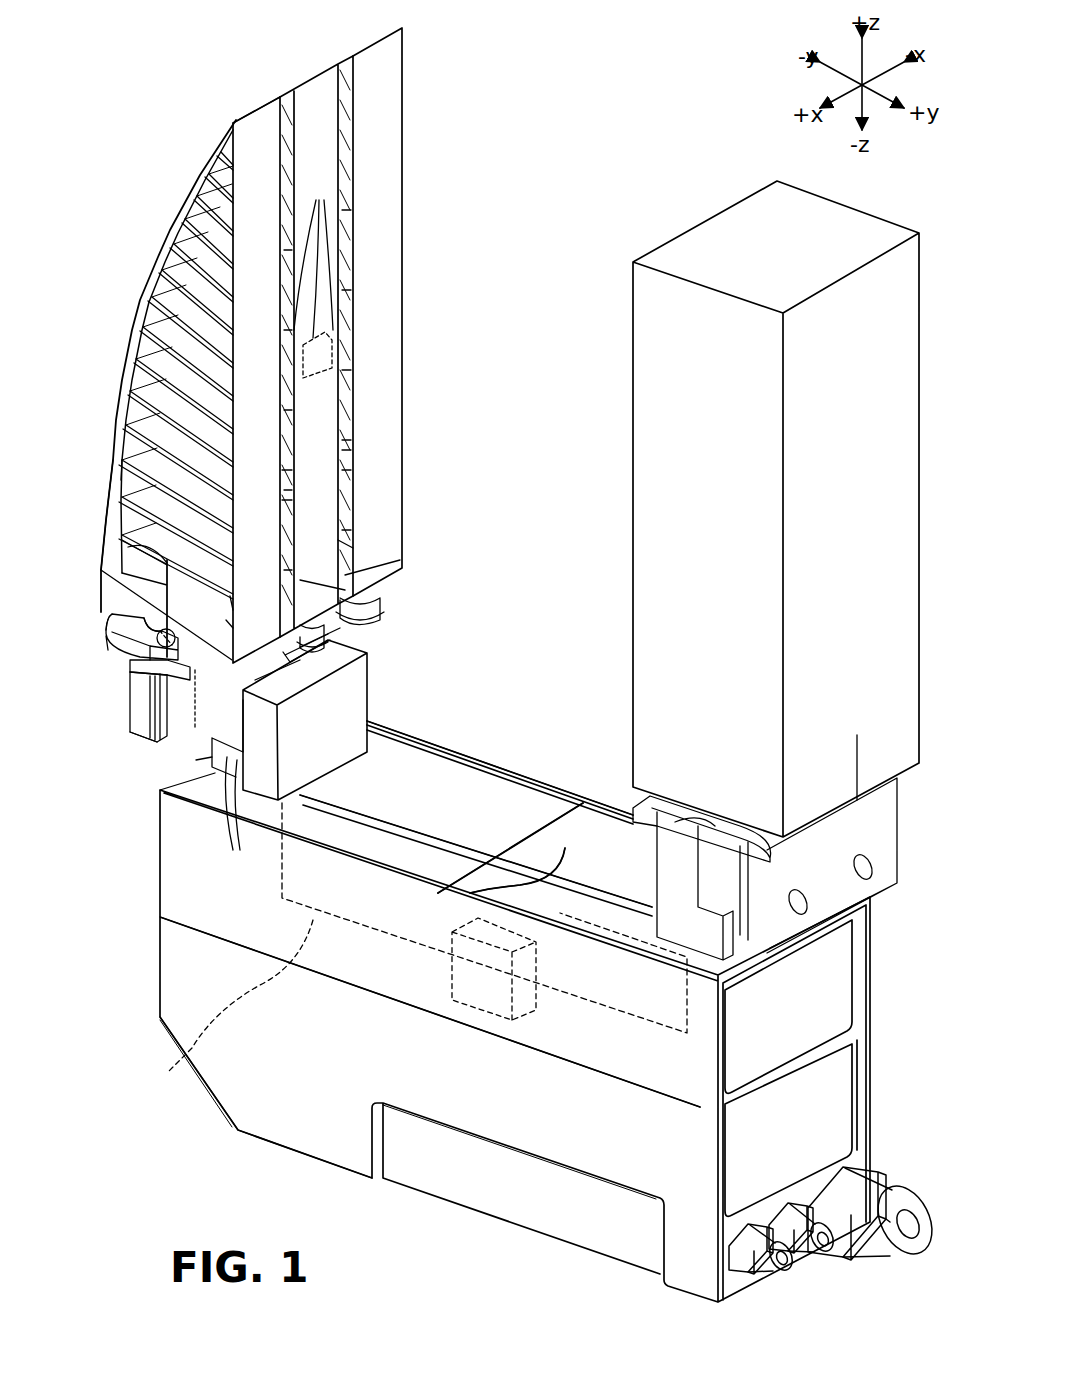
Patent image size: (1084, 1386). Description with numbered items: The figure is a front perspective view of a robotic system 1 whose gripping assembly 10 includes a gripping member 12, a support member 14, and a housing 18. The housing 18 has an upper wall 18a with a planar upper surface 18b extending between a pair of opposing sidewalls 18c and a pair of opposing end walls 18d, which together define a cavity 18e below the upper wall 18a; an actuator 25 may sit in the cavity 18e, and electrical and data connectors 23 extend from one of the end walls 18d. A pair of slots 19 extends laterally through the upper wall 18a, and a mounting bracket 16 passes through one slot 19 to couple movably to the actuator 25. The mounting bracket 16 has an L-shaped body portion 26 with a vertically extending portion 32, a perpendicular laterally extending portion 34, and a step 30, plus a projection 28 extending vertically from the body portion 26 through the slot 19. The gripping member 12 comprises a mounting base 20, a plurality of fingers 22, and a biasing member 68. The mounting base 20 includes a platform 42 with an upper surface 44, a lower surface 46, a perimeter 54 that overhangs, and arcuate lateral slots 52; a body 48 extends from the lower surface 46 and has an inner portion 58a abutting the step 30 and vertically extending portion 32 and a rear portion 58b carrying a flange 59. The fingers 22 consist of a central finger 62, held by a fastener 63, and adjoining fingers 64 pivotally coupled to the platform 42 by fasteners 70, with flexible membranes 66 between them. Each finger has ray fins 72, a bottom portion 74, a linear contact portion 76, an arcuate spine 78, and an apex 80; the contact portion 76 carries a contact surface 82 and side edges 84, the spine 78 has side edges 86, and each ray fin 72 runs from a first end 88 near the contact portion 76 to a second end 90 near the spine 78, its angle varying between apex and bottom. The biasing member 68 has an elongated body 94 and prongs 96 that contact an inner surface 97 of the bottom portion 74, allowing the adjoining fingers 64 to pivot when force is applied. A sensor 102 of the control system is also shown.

The robotic system 1 is at (578, 78).
The gripping assembly 10 is at (486, 190).
The gripping member 12 is at (259, 361).
The support member 14 is at (683, 212).
The mounting bracket 16 is at (655, 893).
The housing 18 is at (156, 888).
The upper wall 18a is at (470, 790).
The upper surface 18b is at (395, 758).
The opposing sidewalls 18c is at (222, 966).
The opposing end walls 18d is at (162, 920).
The cavity 18e is at (229, 1009).
The slots 19 is at (402, 840).
The mounting base 20 is at (898, 848).
The fingers 22 is at (142, 300).
The electrical and data connectors 23 is at (910, 1165).
The actuator 25 is at (545, 1006).
The body portion 26 is at (368, 688).
The projection 28 is at (303, 797).
The step 30 is at (735, 958).
The vertically extending portion 32 is at (240, 720).
The laterally extending portion 34 is at (233, 790).
The platform 42 is at (102, 634).
The upper surface 44 is at (110, 616).
The lower surface 46 is at (128, 655).
The body 48 is at (134, 700).
The lateral slots 52 is at (176, 679).
The perimeter 54 is at (306, 652).
The inner portion 58a is at (360, 668).
The rear portion 58b is at (135, 668).
The flange 59 is at (128, 716).
The central finger 62 is at (312, 80).
The fastener 63 is at (350, 642).
The adjoining fingers 64 is at (256, 112).
The flexible membranes 66 is at (312, 225).
The biasing member 68 is at (345, 544).
The fastener 70 is at (382, 614).
The ray fins 72 is at (160, 542).
The bottom portion 74 is at (146, 626).
The contact portion 76 is at (250, 372).
The spine 78 is at (150, 283).
The apex 80 is at (235, 120).
The contact surface 82 is at (318, 413).
The side edges 84 is at (232, 505).
The side edges 86 is at (118, 472).
The first end 88 is at (245, 604).
The second end 90 is at (168, 592).
The elongated body 94 is at (372, 580).
The prongs 96 is at (140, 574).
The inner surface 97 is at (232, 622).
The sensor 102 is at (355, 378).